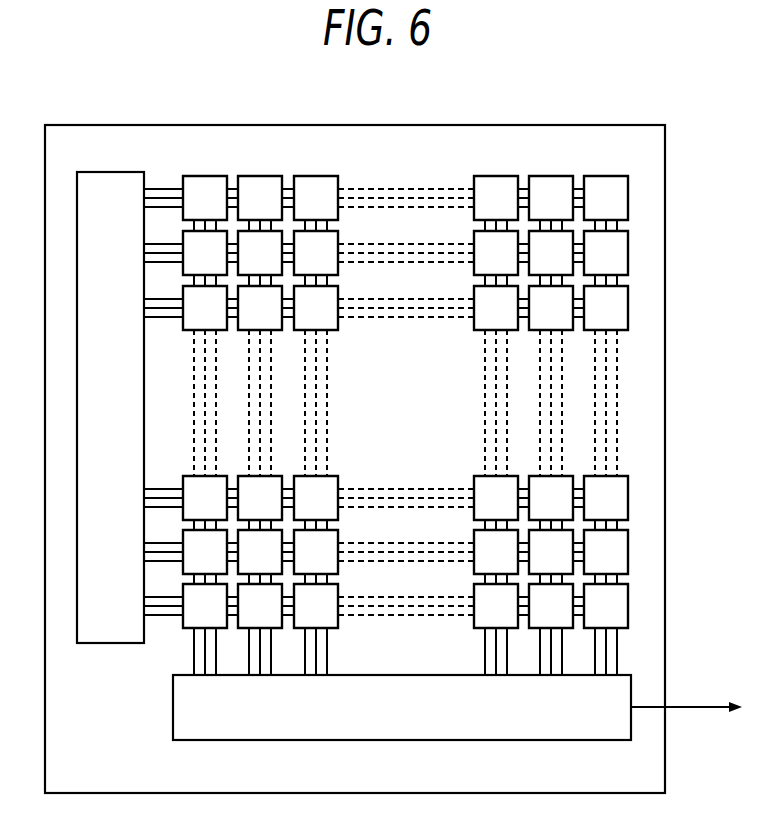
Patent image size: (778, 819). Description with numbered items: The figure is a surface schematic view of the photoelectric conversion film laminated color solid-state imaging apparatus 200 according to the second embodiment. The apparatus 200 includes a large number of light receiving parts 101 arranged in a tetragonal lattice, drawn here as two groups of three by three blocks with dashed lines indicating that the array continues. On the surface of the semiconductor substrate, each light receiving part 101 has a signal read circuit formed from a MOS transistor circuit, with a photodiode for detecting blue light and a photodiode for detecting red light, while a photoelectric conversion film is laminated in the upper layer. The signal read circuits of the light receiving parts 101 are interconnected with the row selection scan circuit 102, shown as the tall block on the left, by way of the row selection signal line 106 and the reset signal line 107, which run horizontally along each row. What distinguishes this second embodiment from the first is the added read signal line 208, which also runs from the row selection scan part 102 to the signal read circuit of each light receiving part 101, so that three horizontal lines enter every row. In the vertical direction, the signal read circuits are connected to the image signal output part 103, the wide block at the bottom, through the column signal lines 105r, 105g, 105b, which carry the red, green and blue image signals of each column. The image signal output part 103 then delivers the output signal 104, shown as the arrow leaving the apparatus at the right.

The photoelectric conversion film laminated color solid-state imaging apparatus 200 is at (312, 125).
The light receiving part 101 is at (327, 176).
The row selection scan circuit 102 is at (103, 172).
The image signal output part 103 is at (463, 740).
The output signal 104 is at (690, 707).
The column signal line 105g is at (316, 355).
The column signal line 105r is at (327, 402).
The column signal line 105b is at (305, 437).
The row selection signal line 106 is at (169, 189).
The reset signal line 107 is at (165, 207).
The read signal line 208 is at (155, 198).